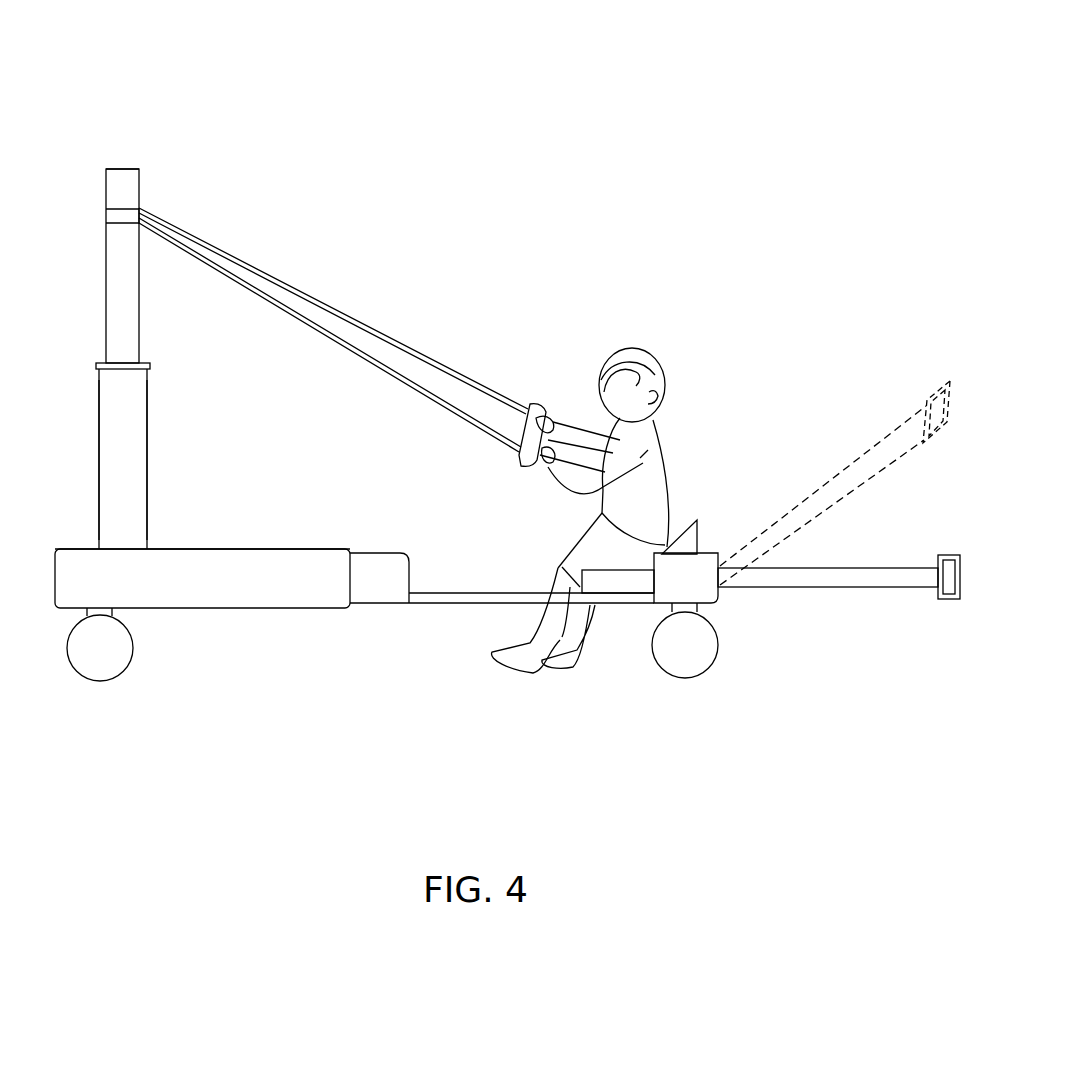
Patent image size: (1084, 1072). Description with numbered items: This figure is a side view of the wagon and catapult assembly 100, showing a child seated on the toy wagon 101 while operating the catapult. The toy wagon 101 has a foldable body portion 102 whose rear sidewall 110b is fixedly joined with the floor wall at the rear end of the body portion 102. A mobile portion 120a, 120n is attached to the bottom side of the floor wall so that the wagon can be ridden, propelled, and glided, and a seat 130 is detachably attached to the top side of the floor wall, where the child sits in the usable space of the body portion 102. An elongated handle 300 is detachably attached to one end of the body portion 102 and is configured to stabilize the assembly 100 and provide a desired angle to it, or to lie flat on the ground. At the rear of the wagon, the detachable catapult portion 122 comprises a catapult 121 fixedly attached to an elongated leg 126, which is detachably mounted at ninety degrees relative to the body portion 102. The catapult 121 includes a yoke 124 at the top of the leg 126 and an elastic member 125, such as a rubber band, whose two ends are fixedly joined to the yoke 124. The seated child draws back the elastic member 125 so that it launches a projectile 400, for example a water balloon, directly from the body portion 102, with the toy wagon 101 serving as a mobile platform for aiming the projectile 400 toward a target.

The wagon and catapult assembly 100 is at (745, 88).
The toy wagon 101 is at (745, 633).
The foldable body portion 102 is at (82, 536).
The rear sidewall 110b is at (273, 591).
The mobile portion 120a is at (107, 660).
The mobile portion 120n is at (688, 655).
The catapult 121 is at (99, 281).
The catapult portion 122 is at (167, 166).
The yoke 124 is at (122, 180).
The elastic member 125 is at (377, 368).
The elongated leg 126 is at (140, 447).
The seat 130 is at (683, 548).
The elongated handle 300 is at (848, 566).
The projectile 400 is at (533, 408).